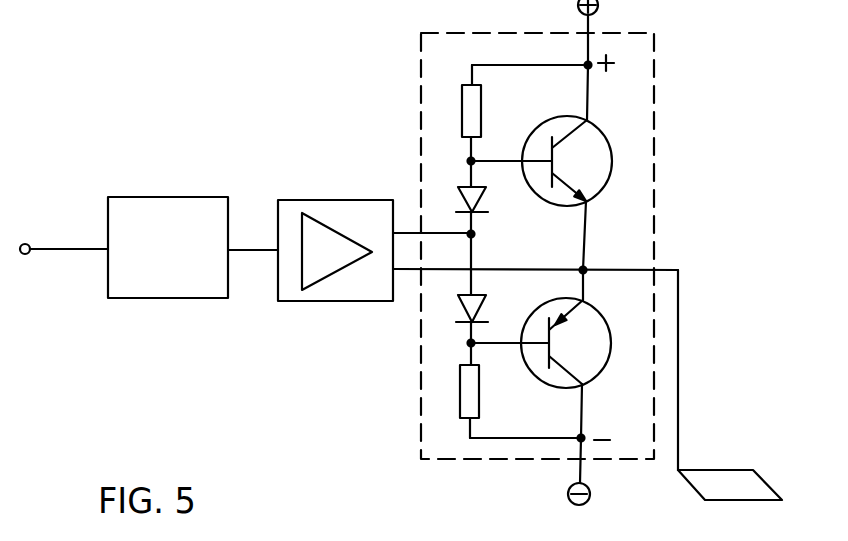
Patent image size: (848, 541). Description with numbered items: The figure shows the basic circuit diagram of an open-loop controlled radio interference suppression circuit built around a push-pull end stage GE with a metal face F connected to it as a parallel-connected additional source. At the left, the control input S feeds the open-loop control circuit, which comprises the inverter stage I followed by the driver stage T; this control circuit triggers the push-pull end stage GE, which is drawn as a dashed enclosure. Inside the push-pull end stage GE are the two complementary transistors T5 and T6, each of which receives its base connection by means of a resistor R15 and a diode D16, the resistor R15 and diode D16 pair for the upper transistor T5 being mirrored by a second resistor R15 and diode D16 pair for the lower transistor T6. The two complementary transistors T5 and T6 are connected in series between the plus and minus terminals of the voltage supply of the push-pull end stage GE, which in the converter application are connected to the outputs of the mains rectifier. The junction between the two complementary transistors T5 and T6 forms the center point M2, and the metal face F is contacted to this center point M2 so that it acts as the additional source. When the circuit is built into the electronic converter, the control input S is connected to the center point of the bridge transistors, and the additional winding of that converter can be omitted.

The control input S is at (62, 233).
The inverter stage I is at (165, 306).
The driver stage T is at (335, 310).
The push-pull end stage GE is at (465, 468).
The resistor R15 is at (499, 254).
The diode D16 is at (499, 252).
The complementary transistor T5 is at (550, 167).
The complementary transistor T6 is at (550, 354).
The center point M2 is at (535, 257).
The metal face F is at (732, 460).